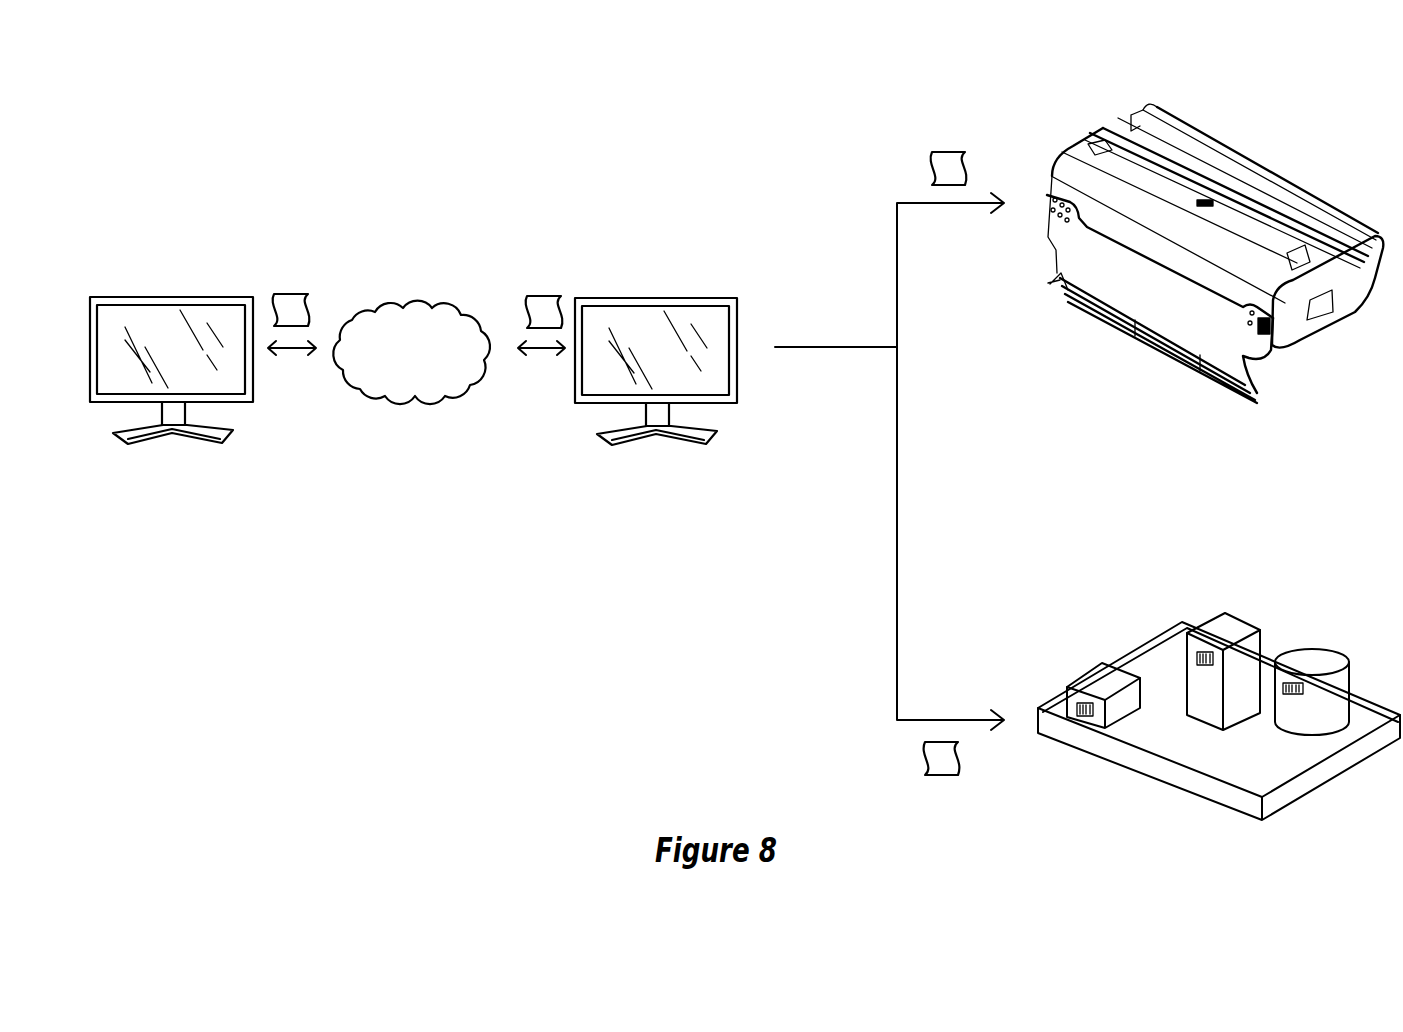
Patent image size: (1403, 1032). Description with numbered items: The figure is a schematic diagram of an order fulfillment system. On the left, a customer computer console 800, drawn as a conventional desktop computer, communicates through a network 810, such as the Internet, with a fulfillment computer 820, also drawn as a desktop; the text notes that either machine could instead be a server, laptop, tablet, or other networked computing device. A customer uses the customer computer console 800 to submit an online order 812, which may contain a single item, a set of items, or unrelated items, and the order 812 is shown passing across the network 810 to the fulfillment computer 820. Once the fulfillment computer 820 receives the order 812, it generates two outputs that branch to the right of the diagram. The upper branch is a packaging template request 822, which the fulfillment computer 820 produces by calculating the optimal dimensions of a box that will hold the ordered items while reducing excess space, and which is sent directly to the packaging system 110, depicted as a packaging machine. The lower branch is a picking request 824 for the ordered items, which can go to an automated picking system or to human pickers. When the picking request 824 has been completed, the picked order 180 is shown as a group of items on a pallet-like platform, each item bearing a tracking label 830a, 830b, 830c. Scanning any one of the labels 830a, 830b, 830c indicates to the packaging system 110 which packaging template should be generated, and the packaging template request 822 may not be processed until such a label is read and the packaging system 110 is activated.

The customer computer console 800 is at (170, 297).
The network 810 is at (411, 352).
The online order 812 is at (295, 293).
The fulfillment computer 820 is at (655, 298).
The packaging template request 822 is at (950, 151).
The picking request 824 is at (945, 776).
The packaging system 110 is at (1203, 143).
The order 180 is at (1127, 752).
The tracking label 830a is at (1087, 702).
The tracking label 830b is at (1227, 660).
The tracking label 830c is at (1293, 682).